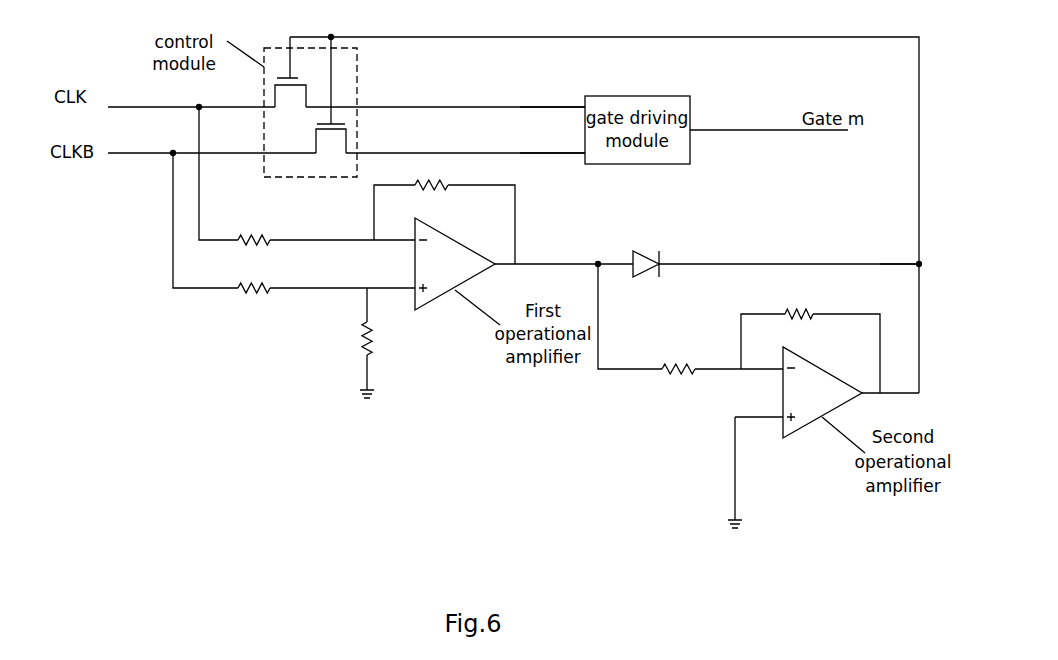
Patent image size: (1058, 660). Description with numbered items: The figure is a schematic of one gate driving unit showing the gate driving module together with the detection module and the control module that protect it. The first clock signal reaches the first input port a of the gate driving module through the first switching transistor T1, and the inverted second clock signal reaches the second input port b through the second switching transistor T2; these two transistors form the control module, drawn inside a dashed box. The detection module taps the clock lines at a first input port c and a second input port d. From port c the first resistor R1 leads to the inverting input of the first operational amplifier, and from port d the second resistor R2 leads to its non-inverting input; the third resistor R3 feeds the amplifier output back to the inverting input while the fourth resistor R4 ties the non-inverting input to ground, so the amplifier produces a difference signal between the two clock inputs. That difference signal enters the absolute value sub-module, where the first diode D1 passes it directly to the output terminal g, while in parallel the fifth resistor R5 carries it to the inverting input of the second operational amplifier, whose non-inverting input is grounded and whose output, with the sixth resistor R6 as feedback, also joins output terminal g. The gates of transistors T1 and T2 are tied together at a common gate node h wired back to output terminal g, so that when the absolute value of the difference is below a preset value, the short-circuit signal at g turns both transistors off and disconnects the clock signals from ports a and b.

The first switching transistor T1 is at (296, 72).
The second switching transistor T2 is at (316, 138).
The first resistor R1 is at (254, 252).
The second resistor R2 is at (254, 299).
The third resistor R3 is at (444, 207).
The fourth resistor R4 is at (354, 343).
The fifth resistor R5 is at (678, 380).
The sixth resistor R6 is at (810, 338).
The first diode D1 is at (646, 275).
The first input port a is at (552, 97).
The second input port b is at (552, 143).
The first input port of the subtraction sub-module c is at (218, 173).
The second input port of the subtraction sub-module d is at (205, 220).
The output terminal g is at (910, 266).
The node h is at (331, 70).